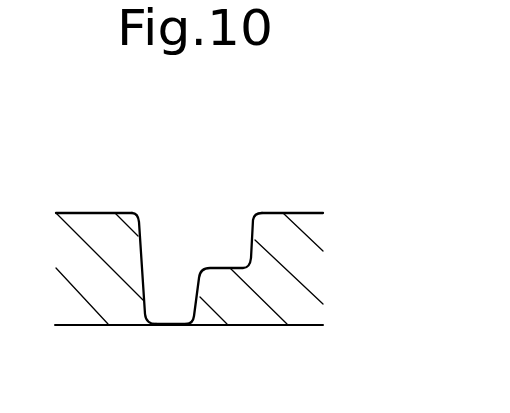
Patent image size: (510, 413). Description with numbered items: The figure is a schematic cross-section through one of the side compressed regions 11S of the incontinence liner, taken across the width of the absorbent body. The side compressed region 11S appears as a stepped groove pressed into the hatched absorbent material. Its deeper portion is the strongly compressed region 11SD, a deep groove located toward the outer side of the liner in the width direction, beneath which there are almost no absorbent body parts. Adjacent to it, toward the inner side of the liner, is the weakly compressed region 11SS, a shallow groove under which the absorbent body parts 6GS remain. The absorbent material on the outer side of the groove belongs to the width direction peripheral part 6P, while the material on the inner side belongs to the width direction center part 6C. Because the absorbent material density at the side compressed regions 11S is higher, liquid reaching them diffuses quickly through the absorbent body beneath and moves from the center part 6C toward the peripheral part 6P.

The side compressed regions 11S is at (190, 226).
The strongly compressed regions 11SD is at (173, 322).
The weakly compressed regions 11SS is at (223, 268).
The width direction peripheral parts 6P is at (112, 304).
The absorbent body parts 6GS is at (225, 306).
The width direction center part 6C is at (283, 306).